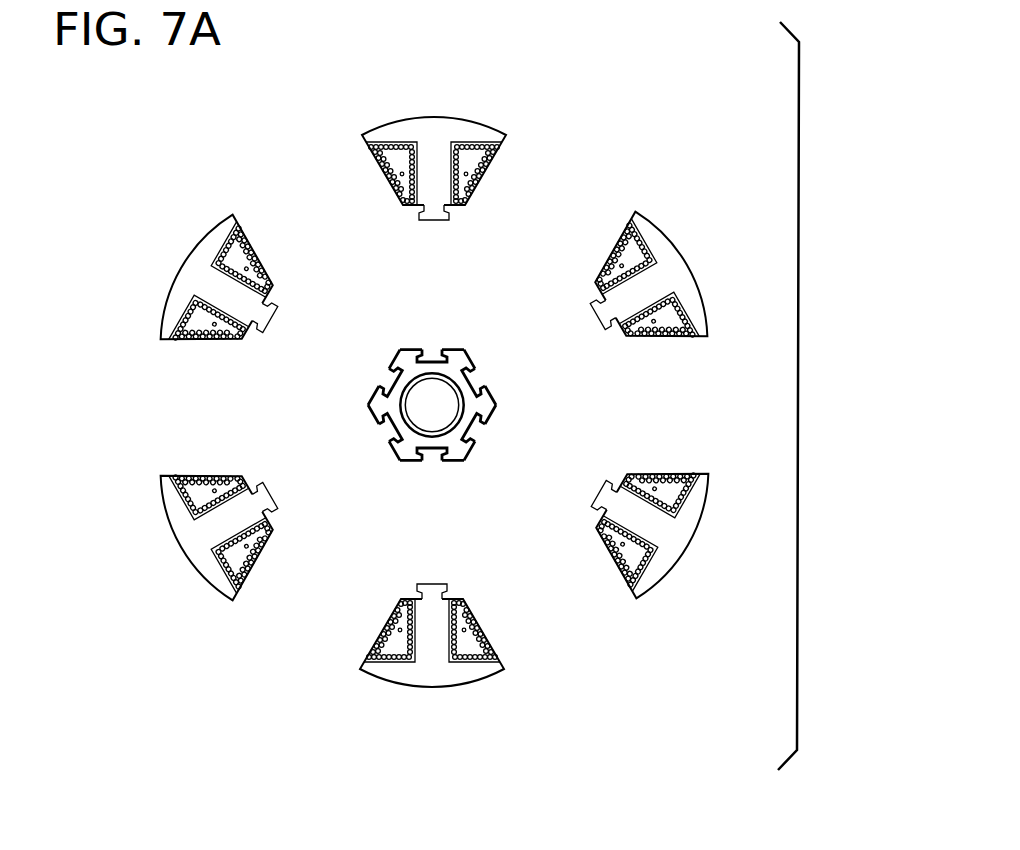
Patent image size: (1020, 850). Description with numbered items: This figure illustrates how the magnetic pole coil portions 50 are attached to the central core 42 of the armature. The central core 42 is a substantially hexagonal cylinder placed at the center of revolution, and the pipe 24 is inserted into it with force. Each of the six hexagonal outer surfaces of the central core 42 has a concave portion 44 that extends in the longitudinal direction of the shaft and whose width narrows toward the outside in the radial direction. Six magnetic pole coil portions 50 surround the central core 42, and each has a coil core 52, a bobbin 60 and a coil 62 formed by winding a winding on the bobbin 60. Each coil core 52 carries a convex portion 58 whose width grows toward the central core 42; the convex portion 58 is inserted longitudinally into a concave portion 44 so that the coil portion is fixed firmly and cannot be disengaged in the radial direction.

The pipe 24 is at (463, 405).
The central core 42 is at (460, 358).
The concave portion 44 is at (432, 358).
The magnetic pole coil portion 50 is at (445, 112).
The coil core 52 is at (408, 130).
The convex portion 58 is at (437, 222).
The bobbin 60 is at (468, 174).
The coil 62 is at (400, 174).